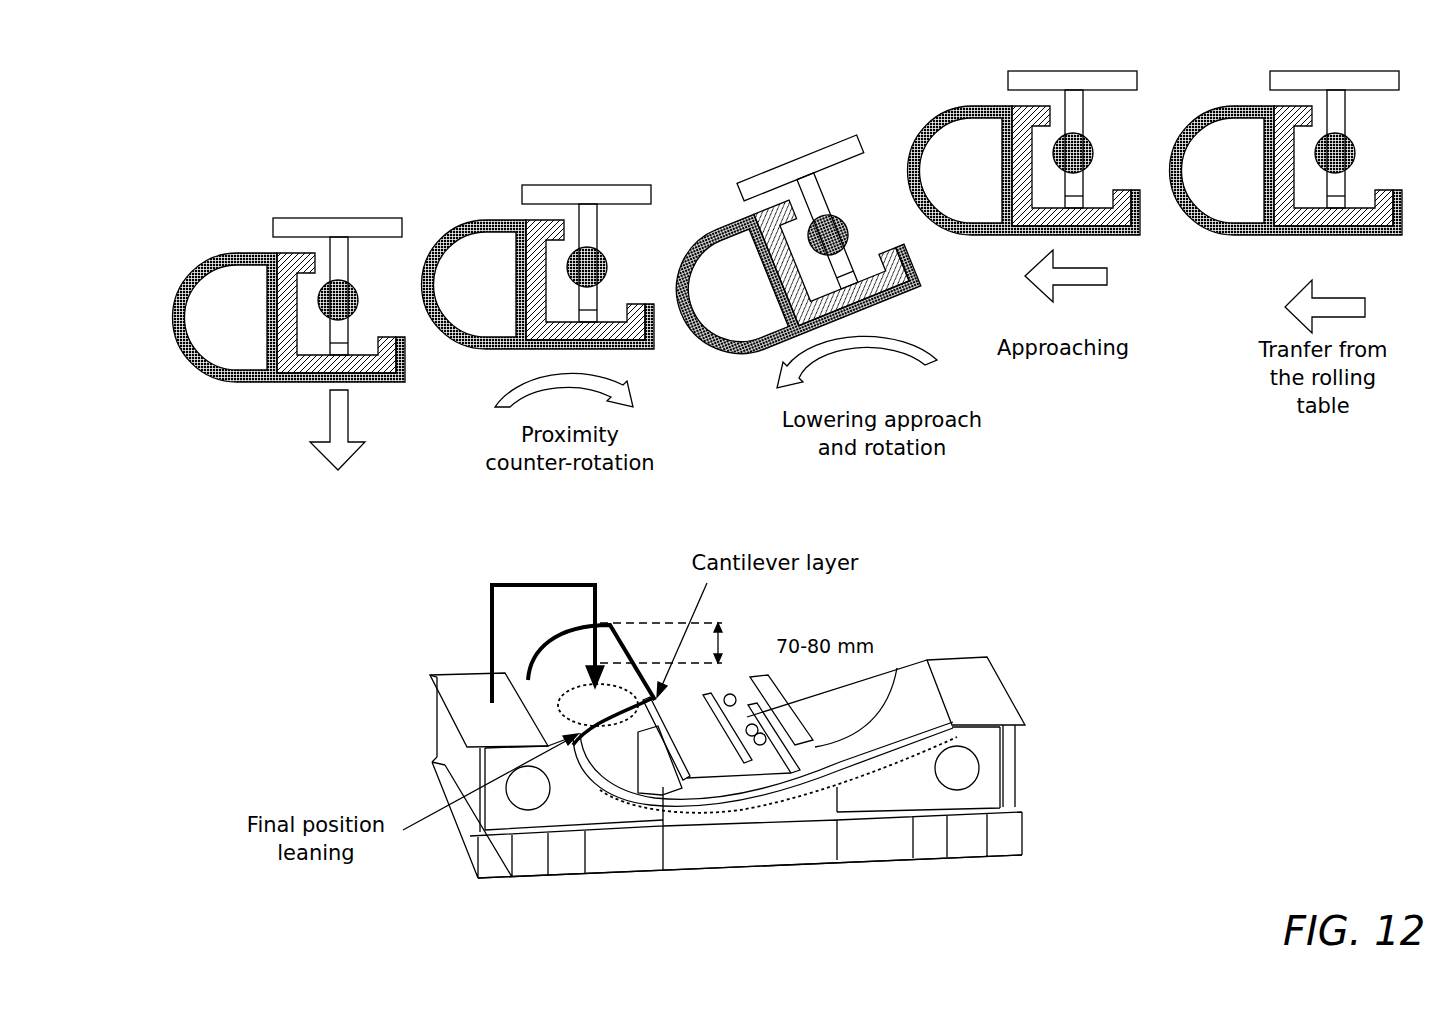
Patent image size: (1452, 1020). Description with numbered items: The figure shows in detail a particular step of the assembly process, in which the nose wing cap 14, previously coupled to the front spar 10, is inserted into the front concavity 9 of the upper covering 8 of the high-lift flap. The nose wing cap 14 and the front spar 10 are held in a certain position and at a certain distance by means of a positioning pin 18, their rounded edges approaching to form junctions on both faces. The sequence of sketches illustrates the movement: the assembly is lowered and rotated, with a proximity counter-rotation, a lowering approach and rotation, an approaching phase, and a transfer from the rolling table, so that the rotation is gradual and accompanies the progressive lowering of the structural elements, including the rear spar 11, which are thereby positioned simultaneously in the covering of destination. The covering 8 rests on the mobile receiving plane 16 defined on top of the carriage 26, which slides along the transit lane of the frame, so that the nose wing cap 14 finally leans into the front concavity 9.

The upper covering 8 is at (867, 682).
The front concavity 9 is at (577, 697).
The front spar 10 is at (390, 382).
The rear spar 11 is at (833, 740).
The nose wing cap 14 is at (172, 313).
The mobile receiving plane 16 is at (797, 793).
The positioning pin 18 is at (349, 256).
The carriage 26 is at (612, 862).